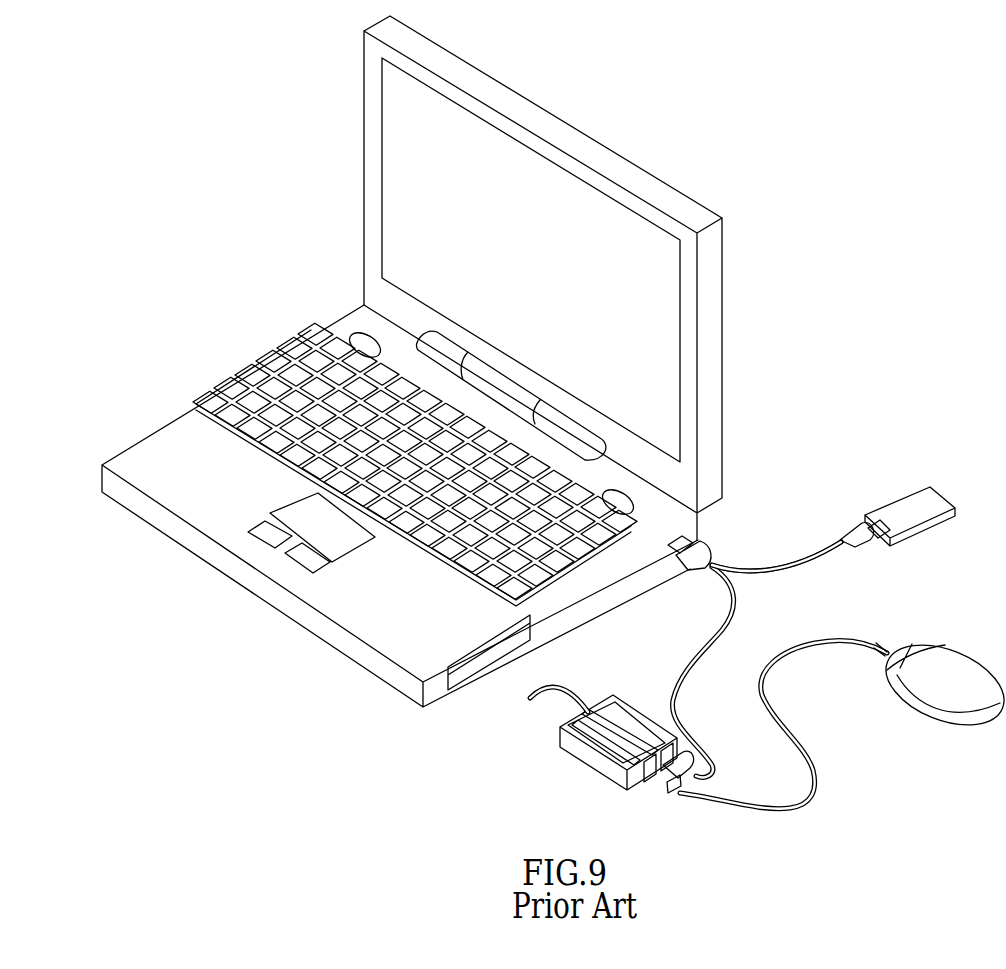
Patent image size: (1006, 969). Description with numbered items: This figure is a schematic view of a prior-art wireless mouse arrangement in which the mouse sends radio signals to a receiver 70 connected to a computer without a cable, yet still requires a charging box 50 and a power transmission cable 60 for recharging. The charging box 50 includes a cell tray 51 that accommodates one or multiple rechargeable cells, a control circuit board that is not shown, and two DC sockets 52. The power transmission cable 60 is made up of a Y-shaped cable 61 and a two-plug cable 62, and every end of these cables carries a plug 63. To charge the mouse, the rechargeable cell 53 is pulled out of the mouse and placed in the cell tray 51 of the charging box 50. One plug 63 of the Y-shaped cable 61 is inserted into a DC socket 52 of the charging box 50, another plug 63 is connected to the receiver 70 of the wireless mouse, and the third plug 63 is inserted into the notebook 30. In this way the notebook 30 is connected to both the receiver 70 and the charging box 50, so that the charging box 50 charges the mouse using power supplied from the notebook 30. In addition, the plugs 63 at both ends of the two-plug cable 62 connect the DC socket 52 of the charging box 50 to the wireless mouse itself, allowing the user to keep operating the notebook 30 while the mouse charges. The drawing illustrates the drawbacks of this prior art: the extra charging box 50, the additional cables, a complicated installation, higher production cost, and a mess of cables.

The notebook 30 is at (705, 283).
The charging box 50 is at (578, 750).
The cell tray 51 is at (627, 707).
The DC socket 52 is at (665, 785).
The rechargeable cell 53 is at (531, 698).
The power transmission cable 60 is at (762, 554).
The Y-shaped cable 61 is at (752, 573).
The 2-plug cable 62 is at (798, 752).
The plug 63 is at (850, 520).
The receiver 70 is at (930, 512).